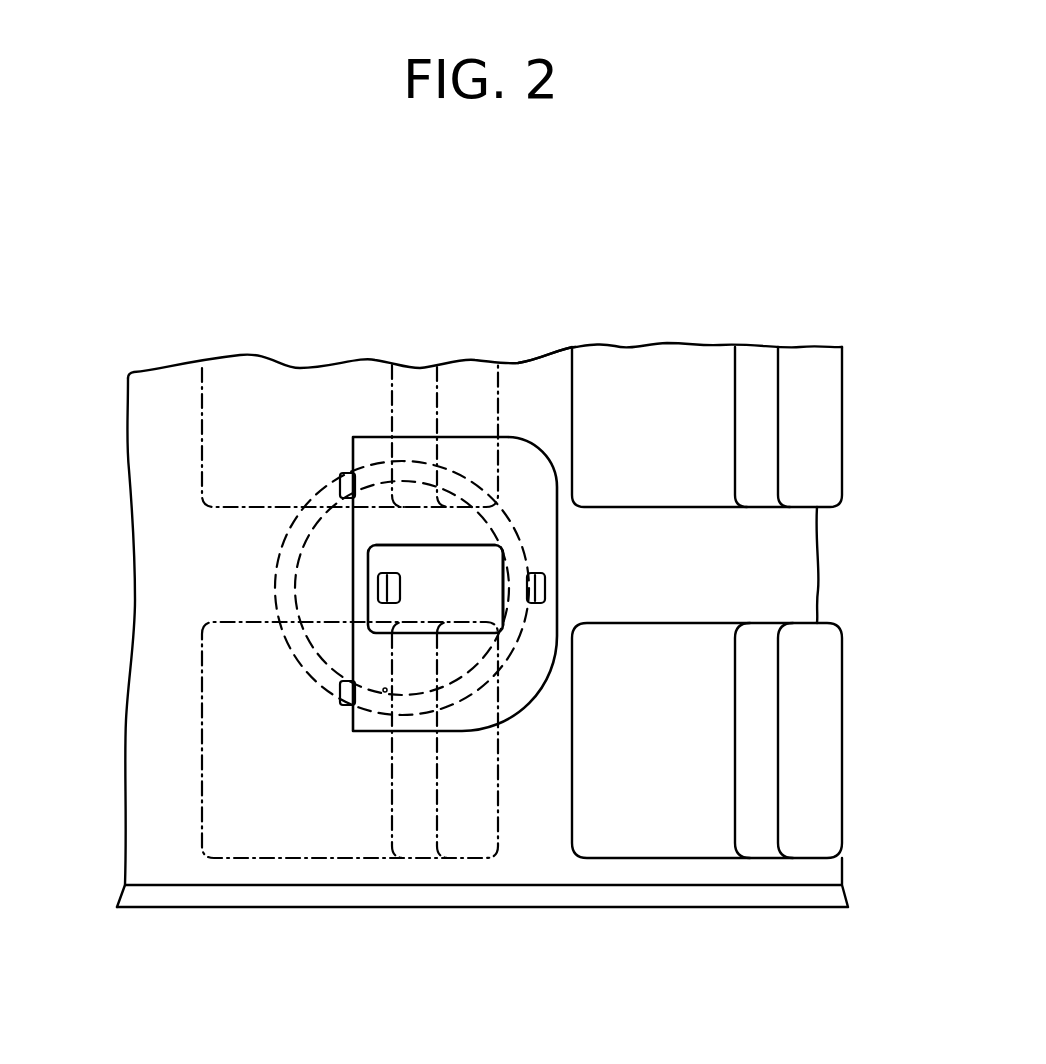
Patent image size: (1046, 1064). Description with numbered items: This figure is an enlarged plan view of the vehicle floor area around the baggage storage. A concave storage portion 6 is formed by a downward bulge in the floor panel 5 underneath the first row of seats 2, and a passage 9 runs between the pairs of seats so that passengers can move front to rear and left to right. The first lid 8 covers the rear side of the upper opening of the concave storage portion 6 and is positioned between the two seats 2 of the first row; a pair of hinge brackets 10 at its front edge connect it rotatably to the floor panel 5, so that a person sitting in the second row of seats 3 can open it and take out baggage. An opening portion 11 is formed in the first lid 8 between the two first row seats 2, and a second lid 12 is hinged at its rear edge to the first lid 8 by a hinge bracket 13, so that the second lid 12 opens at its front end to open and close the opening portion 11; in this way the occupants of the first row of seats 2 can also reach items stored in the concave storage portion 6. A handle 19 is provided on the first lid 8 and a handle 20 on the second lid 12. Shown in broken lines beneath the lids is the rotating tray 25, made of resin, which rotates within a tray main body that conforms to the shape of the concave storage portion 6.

The first row of seats 2 is at (262, 408).
The second row of seats 3 is at (657, 400).
The floor panel 5 is at (700, 567).
The concave storage portion 6 is at (273, 592).
The first lid 8 is at (513, 692).
The passage 9 is at (540, 402).
The hinge brackets 10 is at (340, 487).
The opening portion 11 is at (445, 545).
The second lid 12 is at (452, 598).
The hinge bracket 13 is at (517, 593).
The handle 19 is at (545, 585).
The handle 20 is at (378, 587).
The rotating tray 25 is at (385, 690).